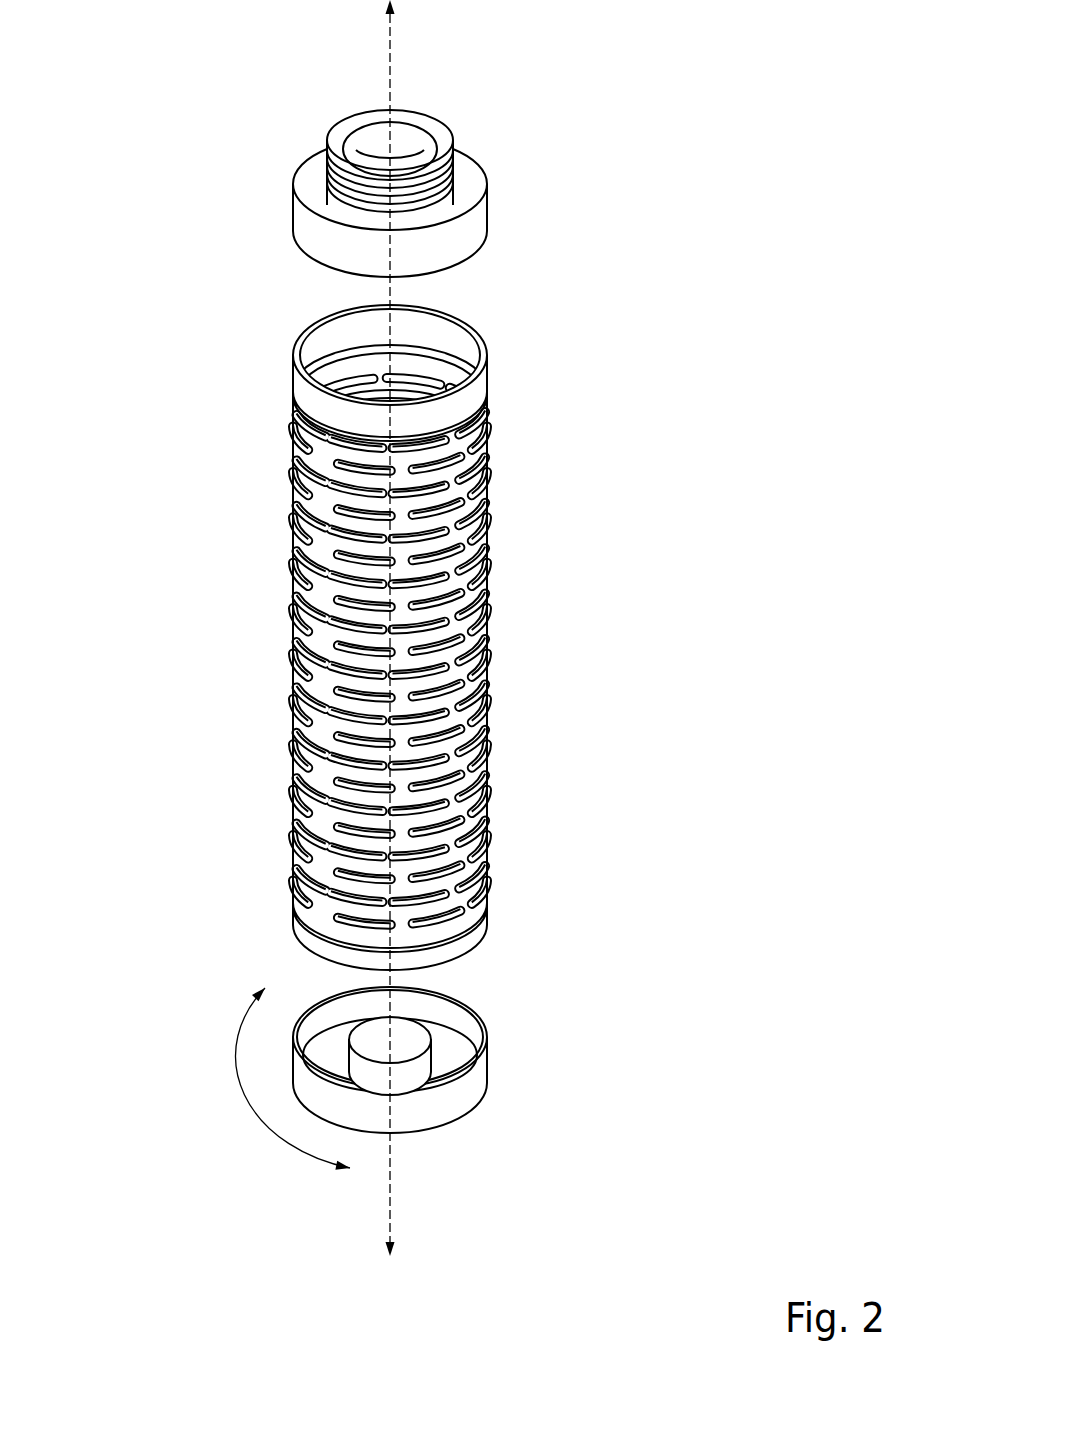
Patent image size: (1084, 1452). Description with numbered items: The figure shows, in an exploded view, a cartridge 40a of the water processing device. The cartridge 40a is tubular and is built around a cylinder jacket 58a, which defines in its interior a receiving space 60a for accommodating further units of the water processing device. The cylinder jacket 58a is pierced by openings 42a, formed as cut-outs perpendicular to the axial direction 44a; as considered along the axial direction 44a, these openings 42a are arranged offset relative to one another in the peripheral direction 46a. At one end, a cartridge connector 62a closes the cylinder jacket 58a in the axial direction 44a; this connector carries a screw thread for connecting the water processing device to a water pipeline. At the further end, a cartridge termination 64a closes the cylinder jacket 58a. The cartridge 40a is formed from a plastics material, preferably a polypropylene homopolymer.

The cartridge 40a is at (405, 628).
The openings 42a is at (346, 723).
The axial direction 44a is at (392, 88).
The peripheral direction 46a is at (243, 1104).
The cylinder jacket 58a is at (401, 585).
The receiving space 60a is at (380, 382).
The cartridge connector 62a is at (466, 168).
The cartridge termination 64a is at (467, 1087).